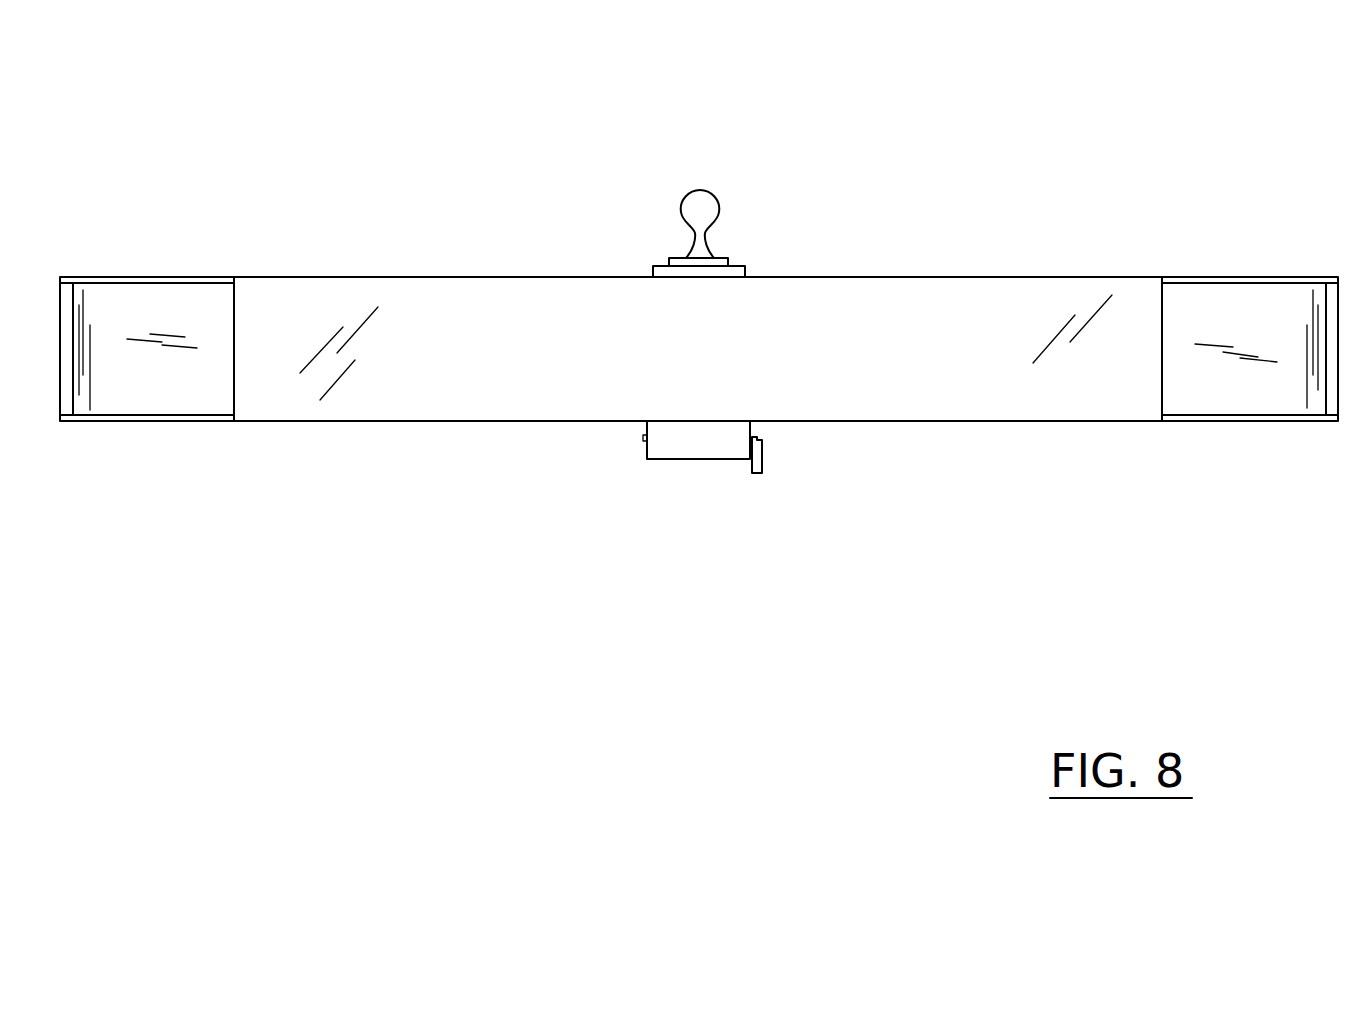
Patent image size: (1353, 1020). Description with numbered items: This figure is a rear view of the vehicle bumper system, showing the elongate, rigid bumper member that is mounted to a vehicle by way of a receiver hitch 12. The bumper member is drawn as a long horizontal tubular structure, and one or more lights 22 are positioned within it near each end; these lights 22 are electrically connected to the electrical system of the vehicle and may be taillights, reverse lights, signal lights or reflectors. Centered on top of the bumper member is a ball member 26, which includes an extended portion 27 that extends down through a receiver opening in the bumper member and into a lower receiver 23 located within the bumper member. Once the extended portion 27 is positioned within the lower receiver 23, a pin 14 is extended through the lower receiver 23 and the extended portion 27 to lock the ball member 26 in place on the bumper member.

The receiver hitch 12 is at (953, 296).
The lights 22 is at (156, 400).
The lower receiver 23 is at (710, 450).
The pin 14 is at (758, 463).
The ball member 26 is at (713, 203).
The extended portion 27 is at (663, 272).